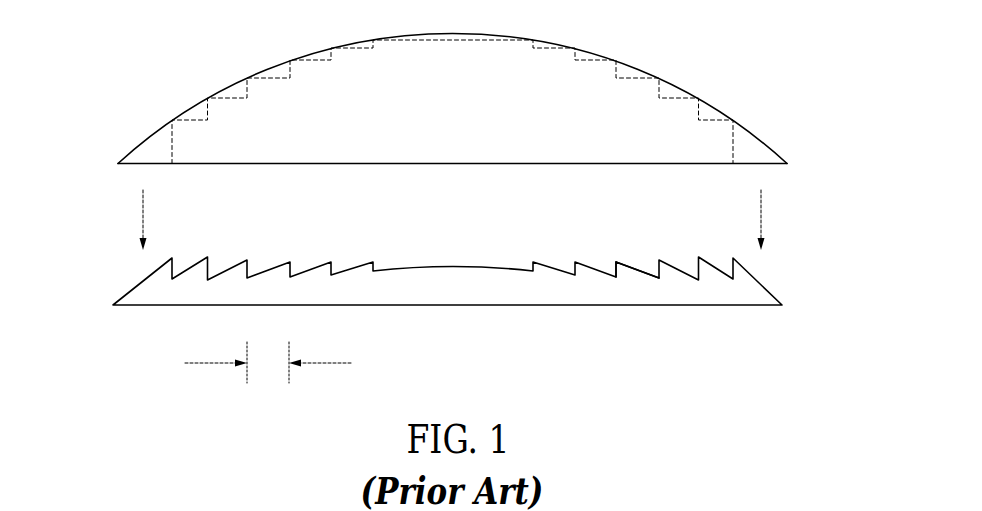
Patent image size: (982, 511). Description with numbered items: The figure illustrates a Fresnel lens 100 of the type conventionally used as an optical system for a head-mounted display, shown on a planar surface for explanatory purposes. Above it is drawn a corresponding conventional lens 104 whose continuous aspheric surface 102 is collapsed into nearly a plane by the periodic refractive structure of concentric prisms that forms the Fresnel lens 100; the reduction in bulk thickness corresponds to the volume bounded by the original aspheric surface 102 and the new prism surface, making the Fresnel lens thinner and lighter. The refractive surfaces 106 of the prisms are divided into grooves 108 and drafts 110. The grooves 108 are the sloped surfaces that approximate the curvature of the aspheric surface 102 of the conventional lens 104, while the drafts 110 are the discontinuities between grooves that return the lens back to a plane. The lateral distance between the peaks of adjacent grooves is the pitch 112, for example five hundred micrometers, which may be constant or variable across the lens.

The Fresnel lens 100 is at (467, 298).
The aspheric surface 102 is at (645, 72).
The conventional lens 104 is at (484, 87).
The refractive surfaces 106 is at (128, 270).
The grooves 108 is at (645, 283).
The drafts 110 is at (620, 277).
The pitch 112 is at (205, 366).